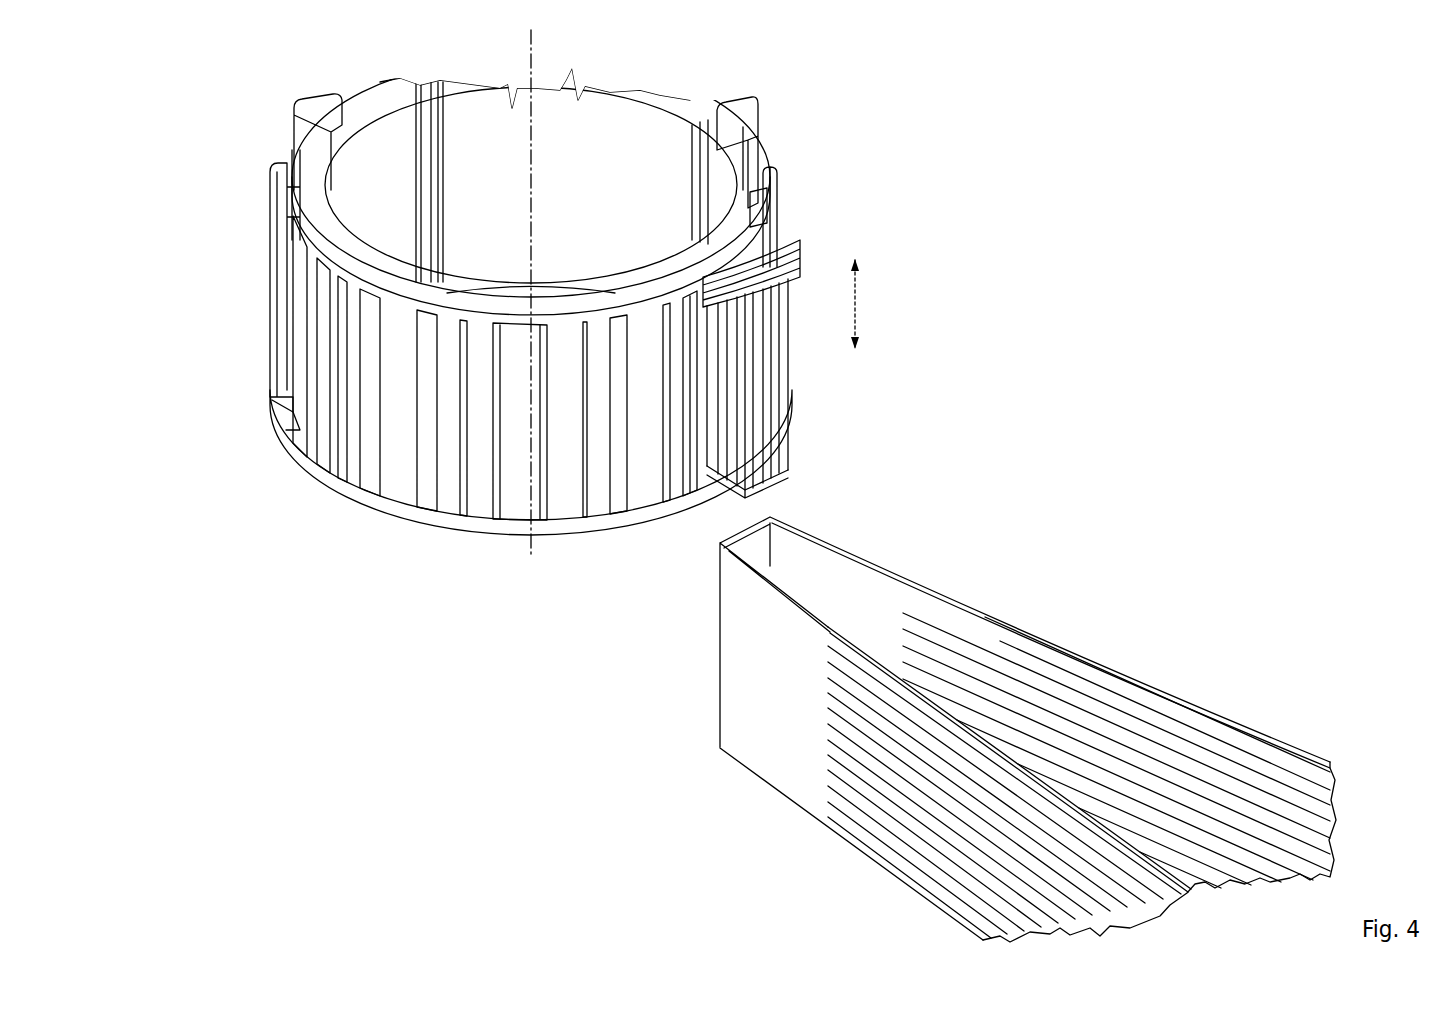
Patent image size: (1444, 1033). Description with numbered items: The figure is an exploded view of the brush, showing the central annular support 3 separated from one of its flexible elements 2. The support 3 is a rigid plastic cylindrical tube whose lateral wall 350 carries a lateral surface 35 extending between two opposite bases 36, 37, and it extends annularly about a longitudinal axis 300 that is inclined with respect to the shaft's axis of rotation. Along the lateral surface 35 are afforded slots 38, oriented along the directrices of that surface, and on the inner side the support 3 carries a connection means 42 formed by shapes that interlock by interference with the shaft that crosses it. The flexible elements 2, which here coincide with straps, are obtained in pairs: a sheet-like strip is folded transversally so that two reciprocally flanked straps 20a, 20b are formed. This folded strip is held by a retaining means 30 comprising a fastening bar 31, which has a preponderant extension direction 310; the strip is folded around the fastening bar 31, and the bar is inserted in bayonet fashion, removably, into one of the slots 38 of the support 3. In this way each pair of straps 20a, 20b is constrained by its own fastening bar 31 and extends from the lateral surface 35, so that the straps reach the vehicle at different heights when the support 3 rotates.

The flexible elements 2 is at (783, 580).
The strap 20a is at (1083, 658).
The strap 20b is at (847, 620).
The central annular support 3 is at (858, 205).
The retaining means 30 is at (790, 397).
The fastening bar 31 is at (784, 450).
The longitudinal axis 300 is at (537, 200).
The preponderant extension direction 310 is at (863, 317).
The lateral surface 35 is at (263, 263).
The lateral wall 350 is at (262, 455).
The base 36 is at (343, 103).
The base 37 is at (497, 543).
The slots 38 is at (687, 433).
The connection means 42 is at (433, 150).